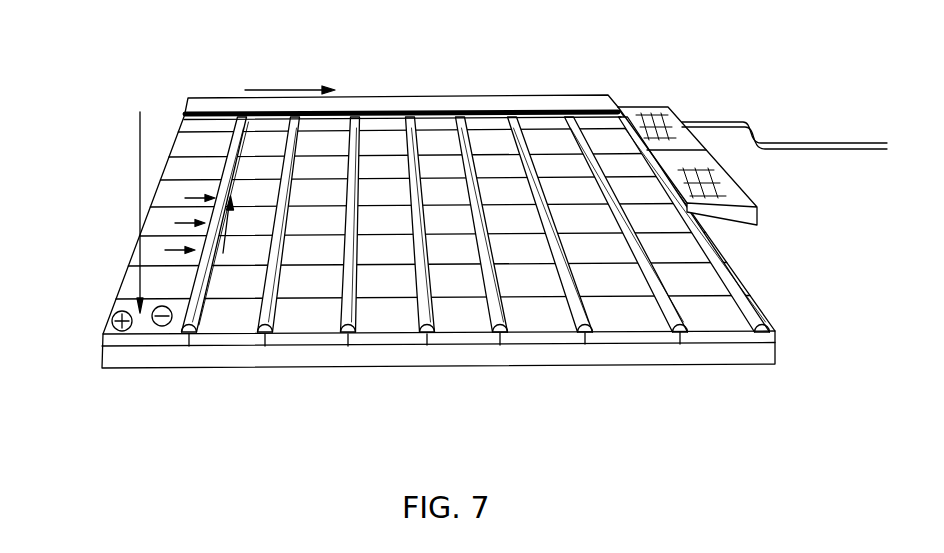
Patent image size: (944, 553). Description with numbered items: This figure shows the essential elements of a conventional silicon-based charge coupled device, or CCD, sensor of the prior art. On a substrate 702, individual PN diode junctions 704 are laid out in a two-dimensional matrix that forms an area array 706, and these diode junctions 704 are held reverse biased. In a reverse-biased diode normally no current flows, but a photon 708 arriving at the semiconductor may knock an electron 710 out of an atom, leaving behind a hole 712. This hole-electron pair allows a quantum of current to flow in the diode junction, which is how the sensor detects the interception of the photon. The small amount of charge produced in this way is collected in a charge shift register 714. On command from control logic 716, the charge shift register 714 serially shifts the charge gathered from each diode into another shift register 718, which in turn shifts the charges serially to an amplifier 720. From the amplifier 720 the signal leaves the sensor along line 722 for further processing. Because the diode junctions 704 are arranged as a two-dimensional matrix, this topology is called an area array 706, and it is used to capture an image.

The substrate 702 is at (760, 350).
The PN diode junctions 704 is at (705, 272).
The area array 706 is at (442, 78).
The photon 708 is at (139, 163).
The electron 710 is at (162, 327).
The hole 712 is at (114, 312).
The charge shift register 714 is at (197, 321).
The control logic 716 is at (753, 203).
The shift register 718 is at (348, 108).
The amplifier 720 is at (648, 104).
The line 722 is at (791, 141).